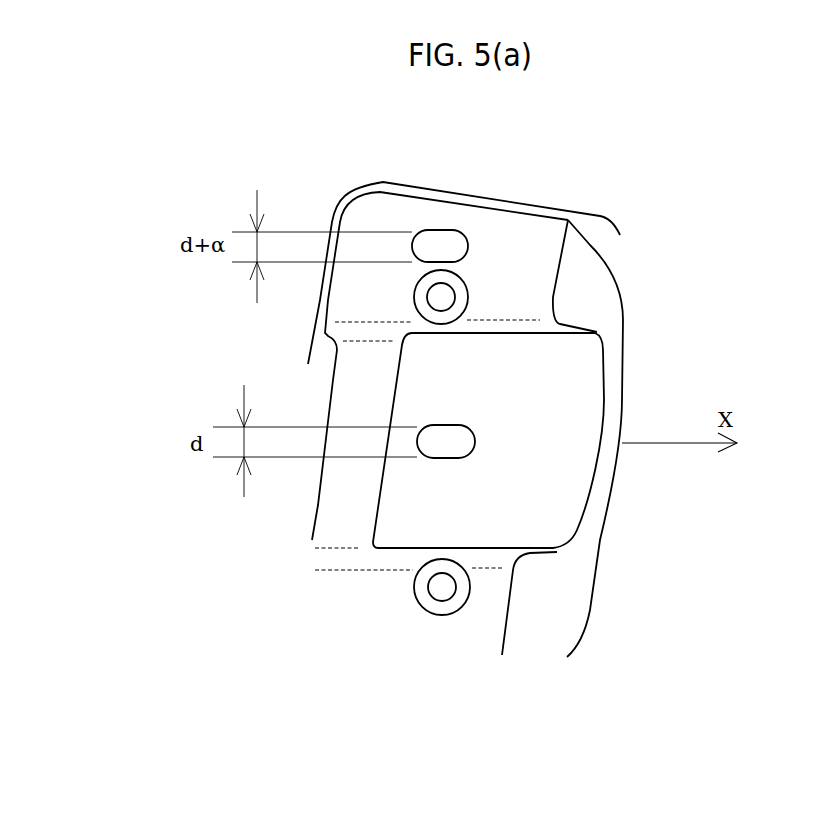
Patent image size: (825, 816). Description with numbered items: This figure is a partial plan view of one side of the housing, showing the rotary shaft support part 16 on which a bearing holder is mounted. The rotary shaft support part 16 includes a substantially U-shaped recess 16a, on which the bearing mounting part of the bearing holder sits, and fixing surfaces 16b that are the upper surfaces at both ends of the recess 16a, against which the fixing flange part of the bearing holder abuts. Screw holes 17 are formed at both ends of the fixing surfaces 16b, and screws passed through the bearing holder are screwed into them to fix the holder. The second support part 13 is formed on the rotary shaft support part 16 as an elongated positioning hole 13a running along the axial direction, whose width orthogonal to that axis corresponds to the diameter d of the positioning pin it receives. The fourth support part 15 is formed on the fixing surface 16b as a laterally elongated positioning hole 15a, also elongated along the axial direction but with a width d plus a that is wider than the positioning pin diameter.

The second support part 13 is at (587, 473).
The elongated positioning hole 13a is at (462, 447).
The fourth support part 15 is at (453, 194).
The laterally elongated positioning hole 15a is at (440, 242).
The rotary shaft support part 16 is at (566, 440).
The recess 16a is at (545, 377).
The fixing surfaces 16b is at (530, 258).
The screw holes 17 is at (447, 298).